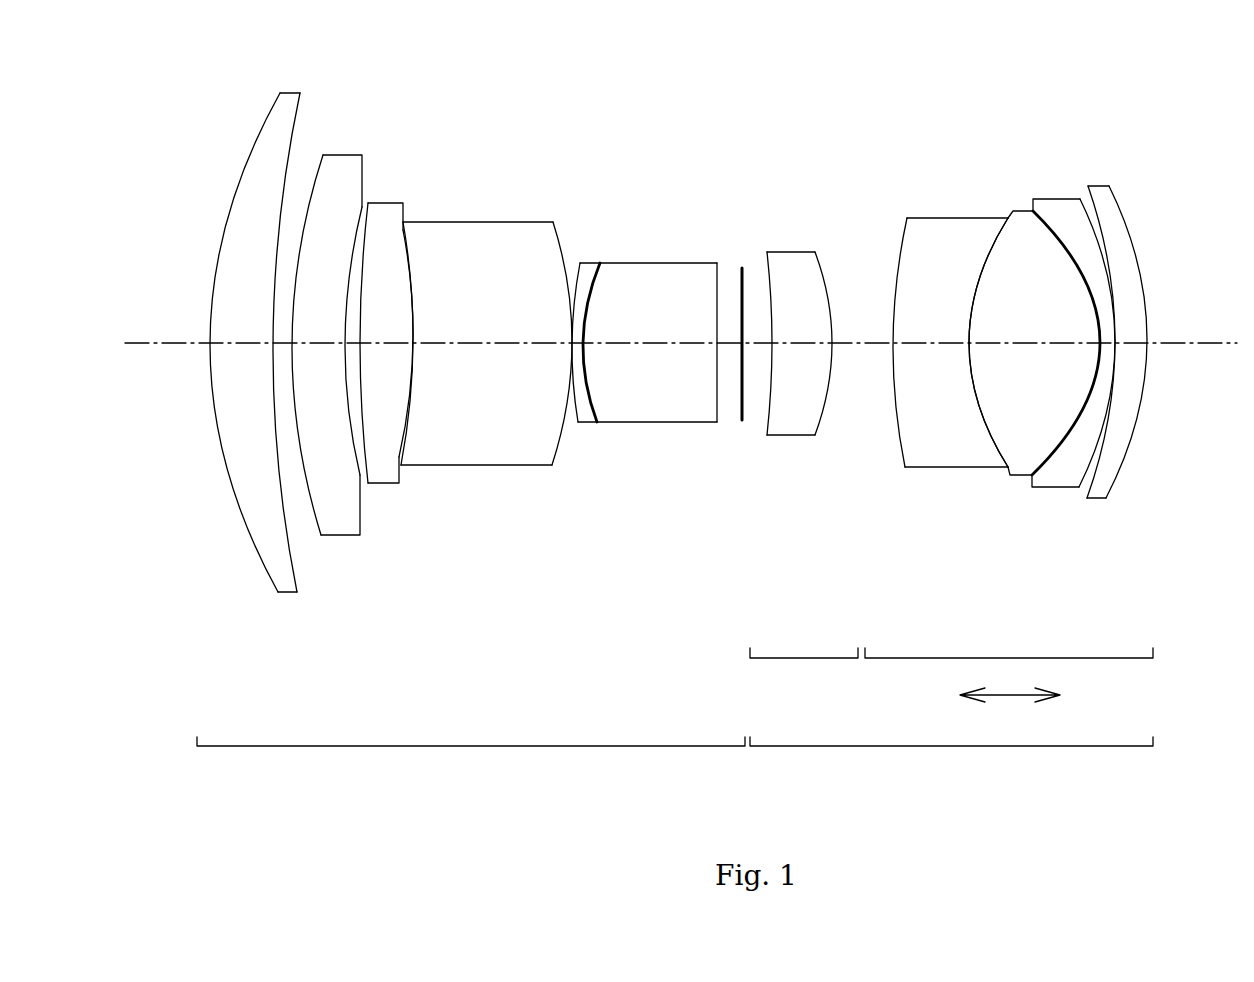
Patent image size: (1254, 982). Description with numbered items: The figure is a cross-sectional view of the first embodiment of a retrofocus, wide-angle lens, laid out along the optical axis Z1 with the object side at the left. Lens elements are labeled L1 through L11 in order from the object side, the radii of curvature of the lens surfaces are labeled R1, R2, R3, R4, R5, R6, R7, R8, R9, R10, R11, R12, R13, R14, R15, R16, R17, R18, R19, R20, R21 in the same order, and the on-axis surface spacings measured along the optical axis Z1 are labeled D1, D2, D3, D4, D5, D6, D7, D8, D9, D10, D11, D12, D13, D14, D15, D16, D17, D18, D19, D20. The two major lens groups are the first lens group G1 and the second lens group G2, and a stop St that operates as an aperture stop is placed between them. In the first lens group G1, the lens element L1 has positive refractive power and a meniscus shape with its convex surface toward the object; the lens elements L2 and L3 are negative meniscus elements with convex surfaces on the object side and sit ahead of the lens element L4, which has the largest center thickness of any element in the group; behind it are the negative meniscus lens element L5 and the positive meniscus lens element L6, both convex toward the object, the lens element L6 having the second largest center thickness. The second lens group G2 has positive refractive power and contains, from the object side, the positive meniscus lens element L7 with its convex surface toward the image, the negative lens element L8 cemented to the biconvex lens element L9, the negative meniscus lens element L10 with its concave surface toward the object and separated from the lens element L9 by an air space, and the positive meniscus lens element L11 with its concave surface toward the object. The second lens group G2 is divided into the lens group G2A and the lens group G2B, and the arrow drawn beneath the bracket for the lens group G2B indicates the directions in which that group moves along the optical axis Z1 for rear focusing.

The first lens element L1 is at (257, 356).
The second lens element L2 is at (327, 369).
The third lens element L3 is at (388, 361).
The fourth lens element L4 is at (489, 351).
The fifth lens element L5 is at (605, 364).
The sixth lens element L6 is at (657, 345).
The seventh lens element L7 is at (793, 362).
The eighth lens element L8 is at (940, 347).
The ninth lens element L9 is at (1034, 375).
The tenth lens element L10 is at (1073, 383).
The eleventh lens element L11 is at (1112, 355).
The radius of curvature R1 is at (253, 553).
The radius of curvature R2 is at (300, 583).
The radius of curvature R3 is at (307, 513).
The radius of curvature R4 is at (343, 455).
The radius of curvature R5 is at (378, 487).
The radius of curvature R6 is at (372, 485).
The radius of curvature R7 is at (403, 437).
The radius of curvature R8 is at (557, 455).
The radius of curvature R9 is at (572, 413).
The radius of curvature R10 is at (592, 417).
The radius of curvature R11 is at (597, 405).
The radius of curvature R12 is at (735, 410).
The radius of curvature R13 is at (767, 422).
The radius of curvature R14 is at (815, 420).
The radius of curvature R15 is at (895, 450).
The radius of curvature R16 is at (983, 432).
The radius of curvature R17 is at (1017, 473).
The radius of curvature R18 is at (1038, 457).
The radius of curvature R19 is at (1065, 488).
The radius of curvature R20 is at (1103, 503).
The radius of curvature R21 is at (1122, 473).
The on-axis surface spacing D1 is at (241, 327).
The on-axis surface spacing D2 is at (265, 320).
The on-axis surface spacing D3 is at (268, 365).
The on-axis surface spacing D4 is at (318, 327).
The on-axis surface spacing D5 is at (338, 353).
The on-axis surface spacing D6 is at (386, 327).
The on-axis surface spacing D7 is at (492, 327).
The on-axis surface spacing D8 is at (560, 327).
The on-axis surface spacing D9 is at (572, 348).
The on-axis surface spacing D10 is at (600, 325).
The on-axis surface spacing D11 is at (650, 327).
The on-axis surface spacing D12 is at (722, 347).
The on-axis surface spacing D13 is at (802, 327).
The on-axis surface spacing D14 is at (862, 327).
The on-axis surface spacing D15 is at (931, 326).
The on-axis surface spacing D16 is at (1034, 326).
The on-axis surface spacing D17 is at (1092, 350).
The on-axis surface spacing D18 is at (1083, 317).
The on-axis surface spacing D19 is at (1130, 299).
The on-axis surface spacing D20 is at (1130, 333).
The stop St is at (714, 395).
The first lens group G1 is at (471, 758).
The second lens group G2 is at (951, 757).
The lens group G2A is at (804, 669).
The lens group G2B is at (1009, 675).
The optical axis Z1 is at (1220, 347).